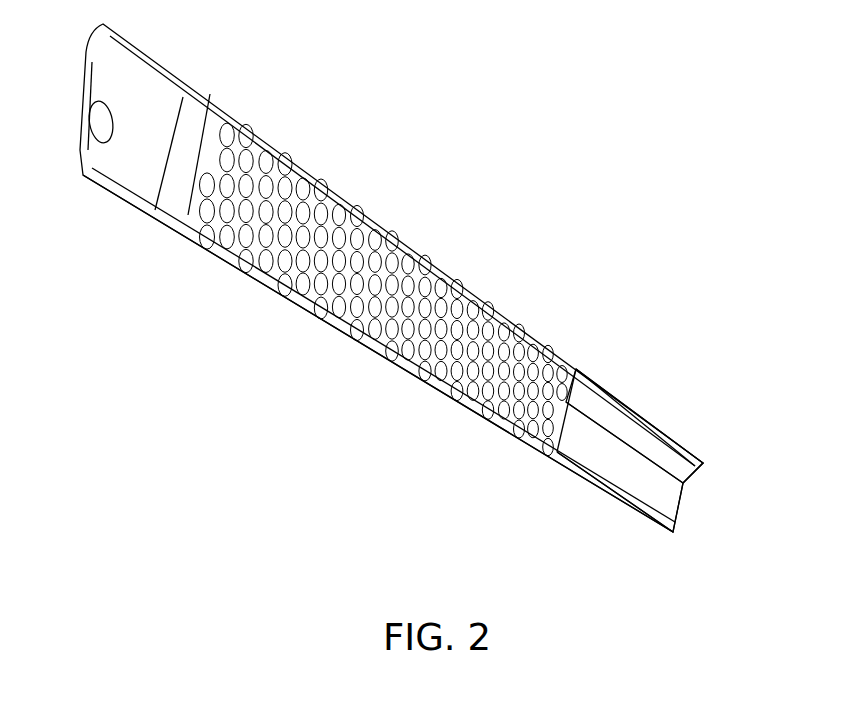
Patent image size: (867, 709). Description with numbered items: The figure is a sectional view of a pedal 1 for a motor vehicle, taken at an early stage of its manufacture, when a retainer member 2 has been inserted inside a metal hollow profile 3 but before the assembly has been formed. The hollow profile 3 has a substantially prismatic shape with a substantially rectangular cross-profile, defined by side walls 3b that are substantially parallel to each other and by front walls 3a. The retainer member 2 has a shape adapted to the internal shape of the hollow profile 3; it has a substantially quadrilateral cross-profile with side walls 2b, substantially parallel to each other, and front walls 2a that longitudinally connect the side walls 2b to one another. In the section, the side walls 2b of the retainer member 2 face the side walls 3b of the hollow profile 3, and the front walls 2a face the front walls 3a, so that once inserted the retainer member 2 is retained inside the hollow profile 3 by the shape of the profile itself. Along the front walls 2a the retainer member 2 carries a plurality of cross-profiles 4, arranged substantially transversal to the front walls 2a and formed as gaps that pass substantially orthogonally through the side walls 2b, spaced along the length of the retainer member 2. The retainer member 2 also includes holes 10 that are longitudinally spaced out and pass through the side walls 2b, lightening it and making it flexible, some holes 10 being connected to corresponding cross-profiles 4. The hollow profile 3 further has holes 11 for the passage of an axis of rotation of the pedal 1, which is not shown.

The pedal 1 is at (418, 309).
The retainer member 2 is at (391, 278).
The front walls 2a is at (476, 298).
The side walls 2b is at (507, 345).
The hollow profile 3 is at (639, 445).
The front walls 3a is at (617, 408).
The side walls 3b is at (622, 453).
The cross-profiles 4 is at (257, 133).
The holes 10 is at (358, 227).
The holes 11 is at (110, 135).